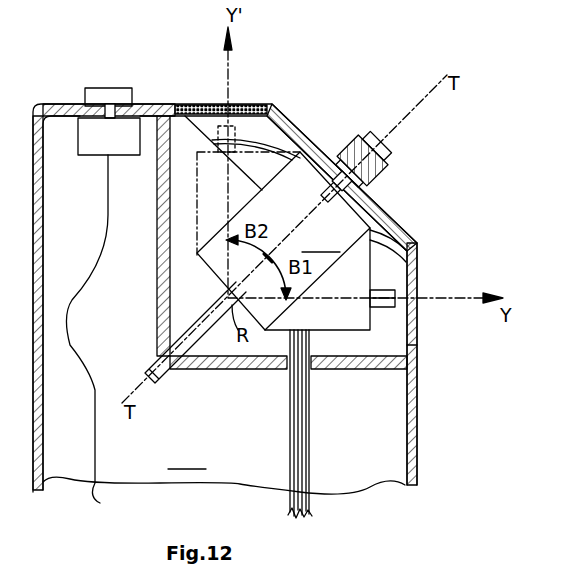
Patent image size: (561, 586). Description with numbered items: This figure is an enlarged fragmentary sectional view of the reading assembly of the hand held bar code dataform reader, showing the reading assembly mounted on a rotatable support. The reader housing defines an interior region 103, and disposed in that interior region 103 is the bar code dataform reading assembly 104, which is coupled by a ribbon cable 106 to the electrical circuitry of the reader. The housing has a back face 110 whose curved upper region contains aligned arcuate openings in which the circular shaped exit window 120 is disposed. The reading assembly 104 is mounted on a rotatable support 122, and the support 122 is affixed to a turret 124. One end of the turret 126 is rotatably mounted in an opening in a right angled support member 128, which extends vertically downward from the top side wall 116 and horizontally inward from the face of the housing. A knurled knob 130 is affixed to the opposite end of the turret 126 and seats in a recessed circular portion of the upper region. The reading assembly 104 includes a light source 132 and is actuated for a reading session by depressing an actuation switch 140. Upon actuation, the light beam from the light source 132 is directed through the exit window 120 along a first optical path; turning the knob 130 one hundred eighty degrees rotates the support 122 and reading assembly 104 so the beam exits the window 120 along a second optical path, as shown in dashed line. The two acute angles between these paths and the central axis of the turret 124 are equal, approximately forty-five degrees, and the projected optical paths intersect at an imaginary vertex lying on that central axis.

The interior region 103 is at (225, 299).
The bar code dataform reading assembly 104 is at (357, 320).
The ribbon cable 106 is at (300, 445).
The back face 110 is at (410, 385).
The top portion of side wall 116 is at (168, 114).
The exit window 120 is at (262, 112).
The rotatable support 122 is at (295, 223).
The turret 124 is at (334, 172).
The turret 126 is at (168, 398).
The right angled support member 128 is at (160, 258).
The knurled knob 130 is at (350, 140).
The light source 132 is at (382, 297).
The actuation switch 140 is at (108, 100).